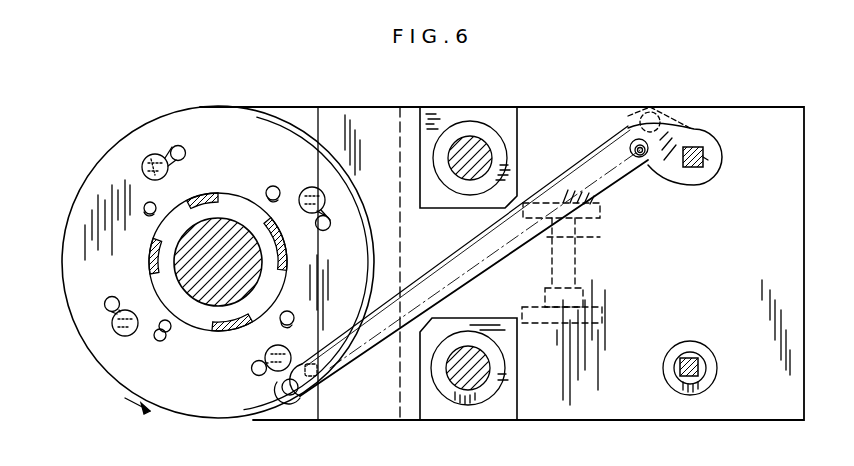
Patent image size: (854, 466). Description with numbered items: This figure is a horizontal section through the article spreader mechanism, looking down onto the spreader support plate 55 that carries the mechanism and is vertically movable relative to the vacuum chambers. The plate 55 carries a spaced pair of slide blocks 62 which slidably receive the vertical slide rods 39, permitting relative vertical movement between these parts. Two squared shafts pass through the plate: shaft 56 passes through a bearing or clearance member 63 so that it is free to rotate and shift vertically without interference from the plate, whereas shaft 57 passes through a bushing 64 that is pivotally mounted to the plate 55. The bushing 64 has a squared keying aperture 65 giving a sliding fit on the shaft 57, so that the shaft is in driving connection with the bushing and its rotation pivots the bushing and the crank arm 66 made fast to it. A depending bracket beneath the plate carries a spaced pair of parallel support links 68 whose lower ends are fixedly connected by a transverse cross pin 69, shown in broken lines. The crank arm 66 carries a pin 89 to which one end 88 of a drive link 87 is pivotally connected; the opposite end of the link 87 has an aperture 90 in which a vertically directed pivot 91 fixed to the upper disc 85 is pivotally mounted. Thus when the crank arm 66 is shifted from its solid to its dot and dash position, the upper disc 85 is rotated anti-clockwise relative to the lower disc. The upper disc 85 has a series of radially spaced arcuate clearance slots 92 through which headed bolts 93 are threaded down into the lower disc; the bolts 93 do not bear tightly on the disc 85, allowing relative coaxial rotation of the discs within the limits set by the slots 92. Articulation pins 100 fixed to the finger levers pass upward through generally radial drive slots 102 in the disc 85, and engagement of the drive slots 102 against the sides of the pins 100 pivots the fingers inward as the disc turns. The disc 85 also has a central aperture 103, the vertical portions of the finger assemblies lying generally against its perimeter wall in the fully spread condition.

The slide rod 39 is at (459, 140).
The spreader support plate 55 is at (757, 115).
The squared shaft 56 is at (690, 358).
The squared shaft 57 is at (707, 160).
The slide block 62 is at (508, 118).
The bearing or clearance member 63 is at (717, 374).
The bushing 64 is at (690, 187).
The squared keying aperture 65 is at (694, 147).
The crank arm 66 is at (674, 124).
The support link 68 is at (585, 238).
The cross pin 69 is at (560, 268).
The upper disc 85 is at (266, 126).
The drive link 87 is at (430, 287).
The end of drive link 88 is at (633, 139).
The pin 89 is at (642, 158).
The aperture 90 is at (298, 397).
The pivot 91 is at (287, 395).
The arcuate clearance slot 92 is at (177, 153).
The headed bolt 93 is at (150, 162).
The articulation pin 100 is at (162, 341).
The drive slot 102 is at (171, 330).
The central aperture 103 is at (247, 205).